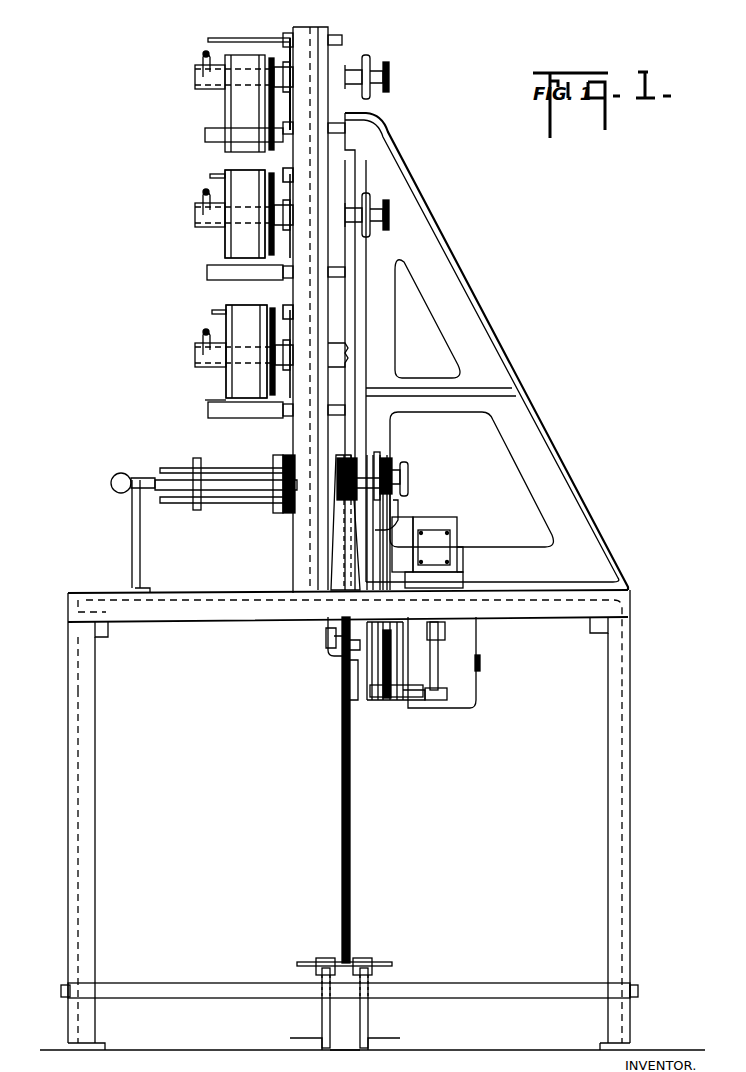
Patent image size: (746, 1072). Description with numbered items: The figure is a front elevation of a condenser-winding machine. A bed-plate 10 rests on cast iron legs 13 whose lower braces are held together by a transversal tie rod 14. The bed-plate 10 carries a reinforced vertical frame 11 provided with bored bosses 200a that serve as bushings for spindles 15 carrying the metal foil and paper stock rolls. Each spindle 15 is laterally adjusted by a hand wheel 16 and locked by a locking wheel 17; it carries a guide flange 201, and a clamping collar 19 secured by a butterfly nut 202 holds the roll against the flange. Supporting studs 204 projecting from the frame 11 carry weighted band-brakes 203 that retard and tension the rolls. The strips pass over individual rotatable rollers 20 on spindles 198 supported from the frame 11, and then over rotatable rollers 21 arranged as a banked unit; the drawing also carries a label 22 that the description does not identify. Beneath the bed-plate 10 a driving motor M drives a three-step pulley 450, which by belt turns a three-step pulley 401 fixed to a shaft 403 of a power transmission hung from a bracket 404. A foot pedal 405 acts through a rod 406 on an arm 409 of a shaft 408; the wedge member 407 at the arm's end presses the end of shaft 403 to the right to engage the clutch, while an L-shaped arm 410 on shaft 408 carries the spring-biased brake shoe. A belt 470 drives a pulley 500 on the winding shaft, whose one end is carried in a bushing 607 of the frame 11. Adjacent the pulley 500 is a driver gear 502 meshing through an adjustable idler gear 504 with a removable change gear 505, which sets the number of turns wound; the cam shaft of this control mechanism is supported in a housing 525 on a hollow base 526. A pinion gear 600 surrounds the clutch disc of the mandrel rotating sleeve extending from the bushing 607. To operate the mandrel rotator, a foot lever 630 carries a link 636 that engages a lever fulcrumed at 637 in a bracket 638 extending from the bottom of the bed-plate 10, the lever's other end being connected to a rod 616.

The bed-plate 10 is at (78, 593).
The vertical frame 11 is at (322, 47).
The legs 13 is at (68, 745).
The tie rod 14 is at (168, 983).
The spindles 15 is at (195, 82).
The hand wheels 16 is at (390, 70).
The locking wheels 17 is at (368, 65).
The clamping collar 19 is at (203, 63).
The rotatable rollers 20 is at (205, 140).
The rotatable rollers 21 is at (235, 305).
The drive unit 22 is at (222, 215).
The spindles 198 is at (313, 98).
The bored bosses 200a is at (243, 103).
The guide flanges 201 is at (275, 40).
The butterfly nut 202 is at (206, 52).
The weighted band-brakes 203 is at (262, 98).
The supporting studs 204 is at (292, 40).
The three-step pulley 401 is at (390, 700).
The shaft 403 is at (438, 665).
The bracket 404 is at (440, 650).
The foot pedal 405 is at (392, 962).
The rod 406 is at (350, 940).
The wedge member 407 is at (370, 690).
The shaft 408 is at (440, 700).
The arm 409 is at (350, 690).
The L-shaped arm 410 is at (405, 698).
The three-step pulley 450 is at (385, 700).
The belt 470 is at (395, 565).
The pulley 500 is at (392, 462).
The driver gear 502 is at (383, 460).
The idler gear 504 is at (398, 505).
The change gear 505 is at (400, 555).
The housing 525 is at (458, 560).
The hollow base 526 is at (458, 582).
The pinion gear 600 is at (348, 455).
The bushing 607 is at (292, 505).
The rod 616 is at (330, 642).
The foot lever 630 is at (300, 962).
The link 636 is at (342, 828).
The fulcrum 637 is at (340, 650).
The bracket 638 is at (328, 626).
The driving motor M is at (470, 705).